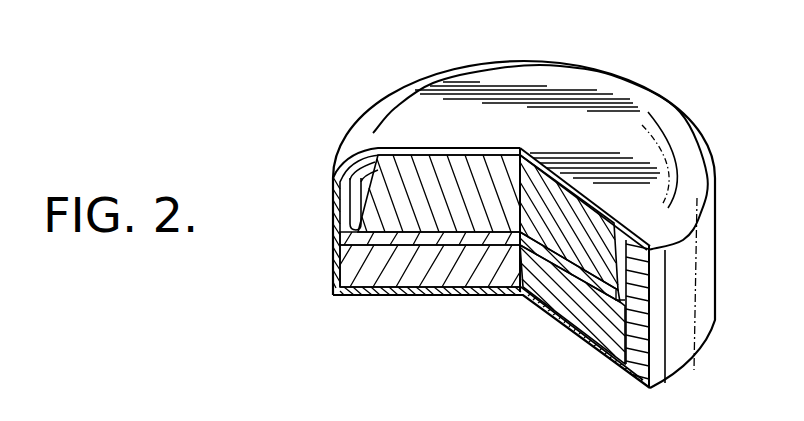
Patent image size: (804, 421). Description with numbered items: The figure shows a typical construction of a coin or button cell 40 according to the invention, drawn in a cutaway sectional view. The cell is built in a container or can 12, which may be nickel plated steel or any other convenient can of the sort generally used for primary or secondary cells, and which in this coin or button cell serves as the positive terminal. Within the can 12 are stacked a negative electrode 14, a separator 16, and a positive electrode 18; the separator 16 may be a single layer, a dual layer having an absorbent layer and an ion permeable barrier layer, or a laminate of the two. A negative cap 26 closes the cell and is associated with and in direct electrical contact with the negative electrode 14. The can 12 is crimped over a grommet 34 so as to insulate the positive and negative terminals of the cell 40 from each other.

The coin or button cell 40 is at (340, 112).
The negative cap 26 is at (545, 76).
The can 12 is at (548, 316).
The negative electrode 14 is at (575, 189).
The separator 16 is at (400, 238).
The positive electrode 18 is at (430, 282).
The grommet 34 is at (334, 198).